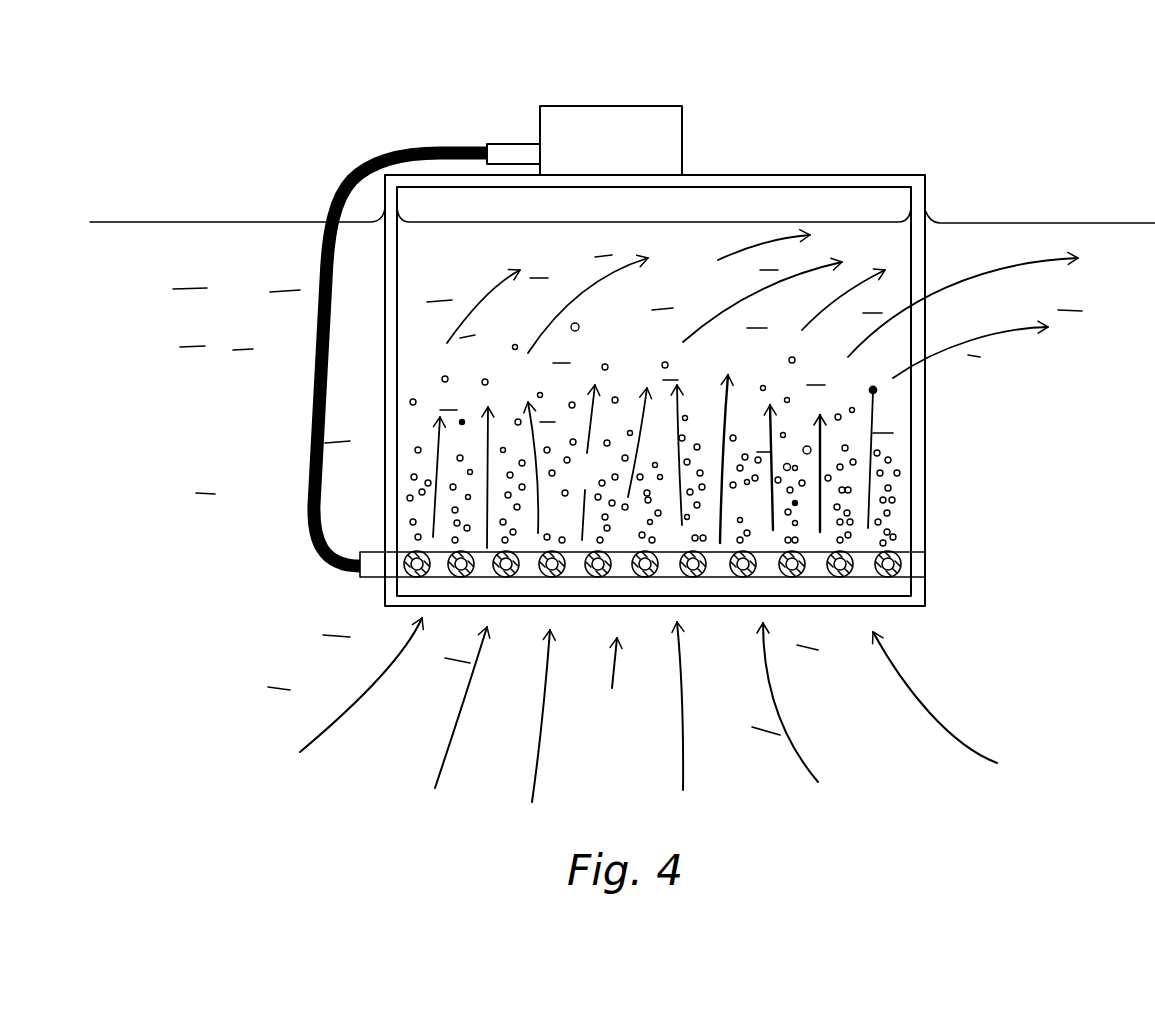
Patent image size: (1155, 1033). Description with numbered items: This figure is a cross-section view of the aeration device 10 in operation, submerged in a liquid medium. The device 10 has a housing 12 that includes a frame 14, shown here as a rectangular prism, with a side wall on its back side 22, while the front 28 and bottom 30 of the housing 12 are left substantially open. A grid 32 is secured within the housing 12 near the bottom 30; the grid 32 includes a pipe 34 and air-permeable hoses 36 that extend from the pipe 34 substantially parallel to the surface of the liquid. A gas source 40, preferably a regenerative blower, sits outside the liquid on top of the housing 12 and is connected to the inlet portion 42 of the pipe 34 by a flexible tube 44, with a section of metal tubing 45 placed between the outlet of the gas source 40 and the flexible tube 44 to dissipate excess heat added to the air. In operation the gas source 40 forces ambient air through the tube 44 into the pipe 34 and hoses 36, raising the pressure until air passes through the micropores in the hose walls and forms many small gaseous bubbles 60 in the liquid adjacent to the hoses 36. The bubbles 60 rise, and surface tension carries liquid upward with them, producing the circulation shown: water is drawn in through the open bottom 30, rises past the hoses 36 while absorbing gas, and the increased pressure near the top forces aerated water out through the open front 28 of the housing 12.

The device 10 is at (878, 100).
The housing 12 is at (932, 260).
The frame 14 is at (918, 304).
The back side 22 is at (338, 407).
The front 28 is at (1020, 409).
The bottom 30 is at (648, 710).
The grid 32 is at (552, 518).
The pipe 34 is at (672, 552).
The air-permeable hose 36 is at (608, 550).
The gas source 40 is at (598, 123).
The inlet portion 42 is at (538, 143).
The flexible tube 44 is at (362, 162).
The section of metal tubing 45 is at (505, 155).
The gaseous bubbles 60 is at (443, 376).